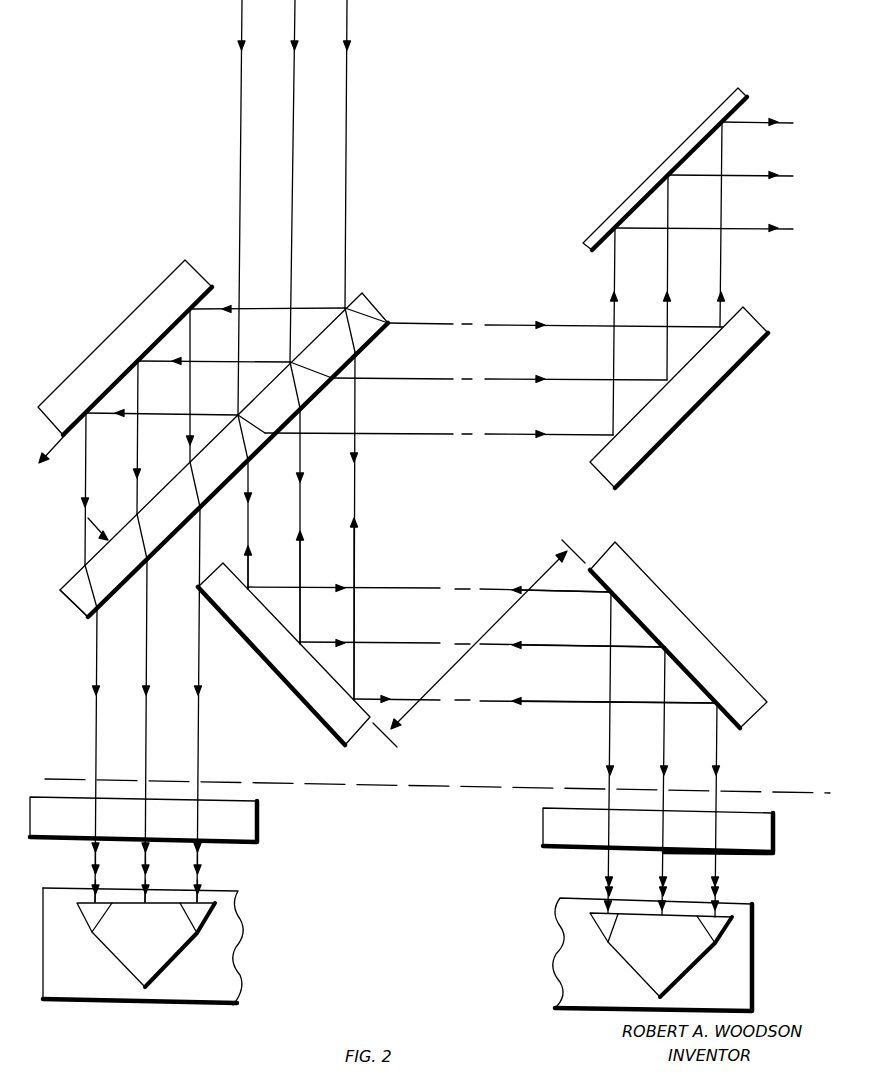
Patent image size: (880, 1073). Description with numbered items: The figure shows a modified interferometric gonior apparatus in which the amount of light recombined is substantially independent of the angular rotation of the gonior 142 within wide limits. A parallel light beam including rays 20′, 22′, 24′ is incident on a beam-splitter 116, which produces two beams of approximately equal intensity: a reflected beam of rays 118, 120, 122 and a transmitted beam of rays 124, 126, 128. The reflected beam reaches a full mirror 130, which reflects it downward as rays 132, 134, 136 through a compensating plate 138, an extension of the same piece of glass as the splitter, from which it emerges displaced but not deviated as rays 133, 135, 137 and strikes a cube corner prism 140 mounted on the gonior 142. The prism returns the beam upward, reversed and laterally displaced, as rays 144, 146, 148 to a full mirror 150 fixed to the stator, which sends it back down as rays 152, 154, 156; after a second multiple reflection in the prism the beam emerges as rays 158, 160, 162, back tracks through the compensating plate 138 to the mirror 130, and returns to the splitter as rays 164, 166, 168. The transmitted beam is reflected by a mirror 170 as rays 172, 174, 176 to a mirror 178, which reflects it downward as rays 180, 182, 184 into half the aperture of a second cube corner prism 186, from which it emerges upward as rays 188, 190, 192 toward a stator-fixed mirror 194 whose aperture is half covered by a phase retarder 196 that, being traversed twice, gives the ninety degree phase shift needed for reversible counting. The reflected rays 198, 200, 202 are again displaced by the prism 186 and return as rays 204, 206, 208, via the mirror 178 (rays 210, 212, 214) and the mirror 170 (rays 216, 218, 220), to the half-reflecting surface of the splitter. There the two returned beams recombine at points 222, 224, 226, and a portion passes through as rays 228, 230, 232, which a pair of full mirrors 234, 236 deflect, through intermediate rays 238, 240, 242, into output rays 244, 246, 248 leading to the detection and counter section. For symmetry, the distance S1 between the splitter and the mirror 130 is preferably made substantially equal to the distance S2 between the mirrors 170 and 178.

The ray 20′ is at (240, 46).
The ray 22′ is at (293, 46).
The ray 24′ is at (345, 46).
The beam-splitter 116 is at (367, 295).
The ray 118 is at (216, 310).
The ray 120 is at (166, 362).
The ray 122 is at (113, 414).
The ray 124 is at (362, 455).
The ray 126 is at (302, 478).
The ray 128 is at (250, 500).
The full mirror 130 is at (126, 384).
The ray 132 is at (84, 504).
The ray 133 is at (83, 693).
The ray 134 is at (136, 476).
The ray 135 is at (142, 693).
The ray 136 is at (188, 443).
The ray 137 is at (192, 693).
The compensating plate 138 is at (94, 590).
The cube corner prism 140 is at (146, 945).
The gonior 142 is at (397, 949).
The ray 144 is at (96, 892).
The ray 146 is at (146, 892).
The ray 148 is at (198, 892).
The full mirror 150 is at (257, 830).
The ray 152 is at (111, 854).
The ray 154 is at (162, 854).
The ray 156 is at (214, 854).
The ray 158 is at (92, 870).
The ray 160 is at (143, 872).
The ray 162 is at (196, 872).
The ray 164 is at (230, 414).
The ray 166 is at (280, 361).
The ray 168 is at (272, 308).
The mirror 170 is at (284, 654).
The ray 172 is at (342, 588).
The ray 174 is at (342, 643).
The ray 176 is at (390, 698).
The mirror 178 is at (678, 635).
The ray 180 is at (608, 770).
The ray 182 is at (662, 770).
The ray 184 is at (714, 770).
The cube corner prism 186 is at (661, 955).
The ray 188 is at (610, 910).
The ray 190 is at (664, 910).
The ray 192 is at (720, 904).
The mirror 194 is at (564, 848).
The phase retarder 196 is at (733, 858).
The ray 198 is at (606, 882).
The ray 200 is at (660, 882).
The ray 202 is at (712, 882).
The ray 204 is at (604, 895).
The ray 206 is at (660, 894).
The ray 208 is at (712, 894).
The ray 210 is at (524, 591).
The ray 212 is at (514, 646).
The ray 214 is at (512, 698).
The ray 216 is at (246, 548).
The ray 218 is at (298, 538).
The ray 220 is at (350, 526).
The point 222 is at (241, 417).
The point 224 is at (294, 364).
The point 226 is at (347, 304).
The ray 228 is at (546, 324).
The ray 230 is at (544, 380).
The ray 232 is at (542, 436).
The full mirror 234 is at (690, 358).
The full mirror 236 is at (642, 198).
The reflected beam 238 is at (632, 331).
The reflected beam 240 is at (684, 277).
The reflected beam 242 is at (738, 224).
The ray 244 is at (786, 228).
The ray 246 is at (775, 165).
The ray 248 is at (788, 110).
The distance S1 is at (76, 498).
The distance S2 is at (479, 643).